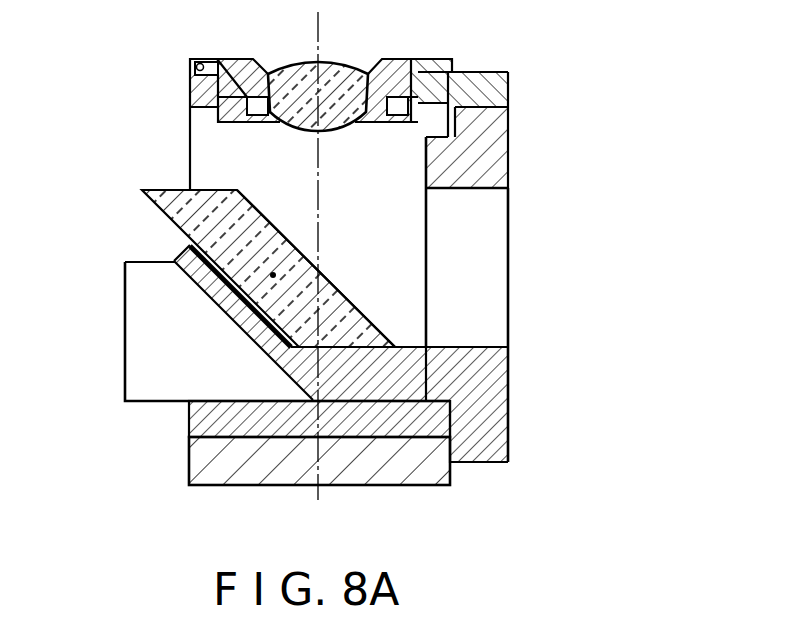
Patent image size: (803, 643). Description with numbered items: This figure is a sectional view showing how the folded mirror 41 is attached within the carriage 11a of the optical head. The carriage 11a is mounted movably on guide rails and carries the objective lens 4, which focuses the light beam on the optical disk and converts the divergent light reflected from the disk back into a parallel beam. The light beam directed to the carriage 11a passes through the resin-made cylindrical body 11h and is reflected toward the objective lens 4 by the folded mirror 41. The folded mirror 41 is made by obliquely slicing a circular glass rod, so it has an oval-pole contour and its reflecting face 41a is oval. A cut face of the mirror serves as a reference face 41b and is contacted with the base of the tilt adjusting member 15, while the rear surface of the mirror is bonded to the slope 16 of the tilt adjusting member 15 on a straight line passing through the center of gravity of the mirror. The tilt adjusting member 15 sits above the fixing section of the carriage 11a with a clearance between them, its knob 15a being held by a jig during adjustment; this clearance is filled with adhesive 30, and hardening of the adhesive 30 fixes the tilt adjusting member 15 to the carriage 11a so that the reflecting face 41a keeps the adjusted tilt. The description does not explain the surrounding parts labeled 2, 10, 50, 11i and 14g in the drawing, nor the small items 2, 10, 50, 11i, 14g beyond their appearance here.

The lens holder 2 is at (433, 62).
The objective lens 4 is at (343, 63).
The fixing ring 10 is at (498, 92).
The housing body 50 is at (533, 234).
The cylindrical body 11h is at (498, 355).
The carriage 11a is at (189, 433).
The inclined mounting surface 11i is at (175, 258).
The tilt adjusting member 15 is at (246, 333).
The knob 15a is at (142, 353).
The slope 16 is at (200, 289).
The adhesive 30 is at (285, 400).
The folded mirror 41 is at (177, 196).
The reflecting face 41a is at (270, 208).
The reference face 41b is at (329, 268).
The focal point 14g is at (274, 275).